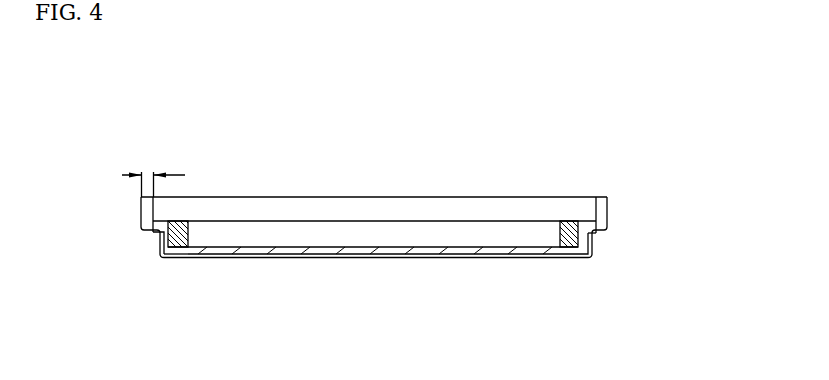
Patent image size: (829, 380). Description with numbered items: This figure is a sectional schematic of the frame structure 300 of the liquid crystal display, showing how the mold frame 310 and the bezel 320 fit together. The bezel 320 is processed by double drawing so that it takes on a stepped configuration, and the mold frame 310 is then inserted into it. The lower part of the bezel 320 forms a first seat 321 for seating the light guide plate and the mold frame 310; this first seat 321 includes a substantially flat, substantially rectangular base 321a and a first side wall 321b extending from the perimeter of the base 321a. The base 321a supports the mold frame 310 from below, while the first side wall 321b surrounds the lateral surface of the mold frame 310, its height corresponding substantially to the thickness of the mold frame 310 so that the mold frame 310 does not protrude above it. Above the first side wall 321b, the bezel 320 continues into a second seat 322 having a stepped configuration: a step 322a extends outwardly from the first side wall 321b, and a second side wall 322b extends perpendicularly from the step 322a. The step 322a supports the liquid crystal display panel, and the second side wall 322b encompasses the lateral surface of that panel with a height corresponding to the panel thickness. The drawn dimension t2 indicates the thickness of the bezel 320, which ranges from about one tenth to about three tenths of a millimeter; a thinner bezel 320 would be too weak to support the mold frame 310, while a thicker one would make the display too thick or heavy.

The frame structure 300 is at (637, 163).
The mold frame 310 is at (188, 223).
The bezel 320 is at (150, 208).
The first seat 321 is at (150, 310).
The base 321a is at (179, 256).
The first side wall 321b is at (167, 240).
The second seat 322 is at (692, 220).
The step 322a is at (592, 233).
The second side wall 322b is at (607, 213).
The thickness of the bezel t2 is at (142, 175).